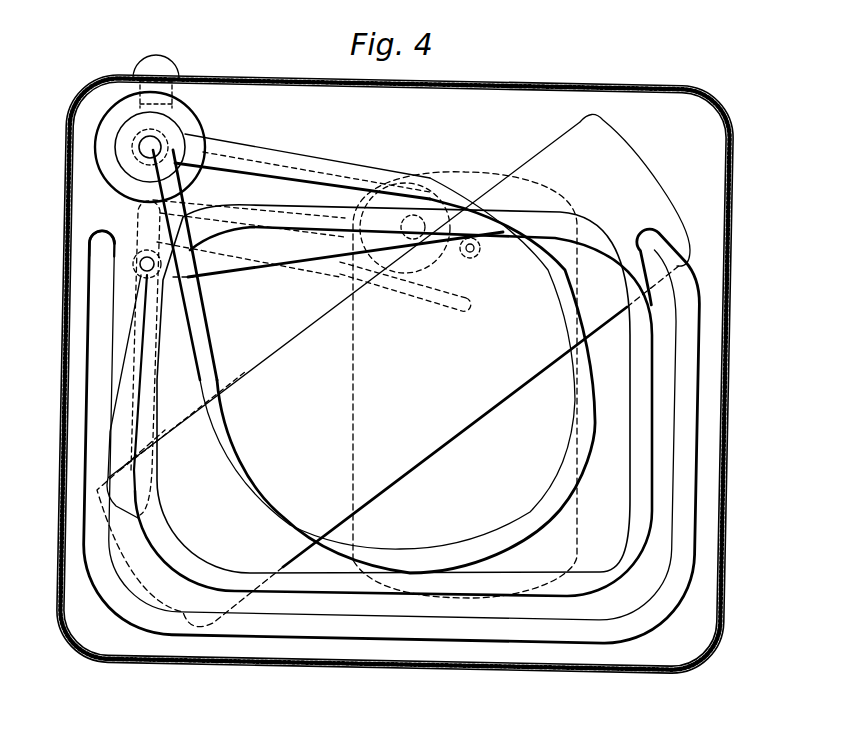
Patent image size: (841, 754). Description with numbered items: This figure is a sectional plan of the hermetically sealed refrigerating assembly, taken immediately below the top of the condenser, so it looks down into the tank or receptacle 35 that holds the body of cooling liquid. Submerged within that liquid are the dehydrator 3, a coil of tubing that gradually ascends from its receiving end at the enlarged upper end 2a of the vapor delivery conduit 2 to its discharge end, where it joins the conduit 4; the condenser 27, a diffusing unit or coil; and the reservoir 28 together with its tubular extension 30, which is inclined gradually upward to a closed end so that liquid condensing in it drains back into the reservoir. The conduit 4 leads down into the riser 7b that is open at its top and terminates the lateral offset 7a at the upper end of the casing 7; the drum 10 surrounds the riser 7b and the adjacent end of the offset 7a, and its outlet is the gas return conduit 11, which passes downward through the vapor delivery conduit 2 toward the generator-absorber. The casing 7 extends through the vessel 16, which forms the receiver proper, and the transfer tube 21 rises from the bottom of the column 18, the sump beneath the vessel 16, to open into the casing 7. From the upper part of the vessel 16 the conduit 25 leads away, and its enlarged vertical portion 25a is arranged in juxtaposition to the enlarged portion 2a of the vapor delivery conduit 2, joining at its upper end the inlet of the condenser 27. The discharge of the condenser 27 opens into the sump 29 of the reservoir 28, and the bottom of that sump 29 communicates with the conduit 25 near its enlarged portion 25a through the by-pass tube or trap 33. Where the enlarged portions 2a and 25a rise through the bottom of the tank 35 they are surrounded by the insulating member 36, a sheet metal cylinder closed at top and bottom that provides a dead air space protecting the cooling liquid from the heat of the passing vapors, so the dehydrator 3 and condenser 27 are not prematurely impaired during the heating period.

The vapor delivery conduit 2 is at (158, 68).
The enlarged upper end of vapor delivery conduit 2a is at (148, 176).
The dehydrator 3 is at (520, 505).
The conduit 4 is at (200, 143).
The casing 7 is at (412, 212).
The lateral offset 7a is at (326, 178).
The riser 7b is at (185, 132).
The drum 10 is at (138, 140).
The gas return conduit 11 is at (135, 98).
The vessel 16 is at (351, 432).
The column 18 is at (480, 260).
The transfer tube 21 is at (462, 260).
The conduit 25 is at (418, 302).
The enlarged vertical portion 25a is at (130, 234).
The condenser 27 is at (282, 258).
The reservoir 28 is at (287, 362).
The sump 29 is at (132, 270).
The tubular extension 30 is at (455, 632).
The by-pass tube or trap 33 is at (146, 246).
The tank or receptacle 35 is at (712, 443).
The insulating member 36 is at (100, 172).